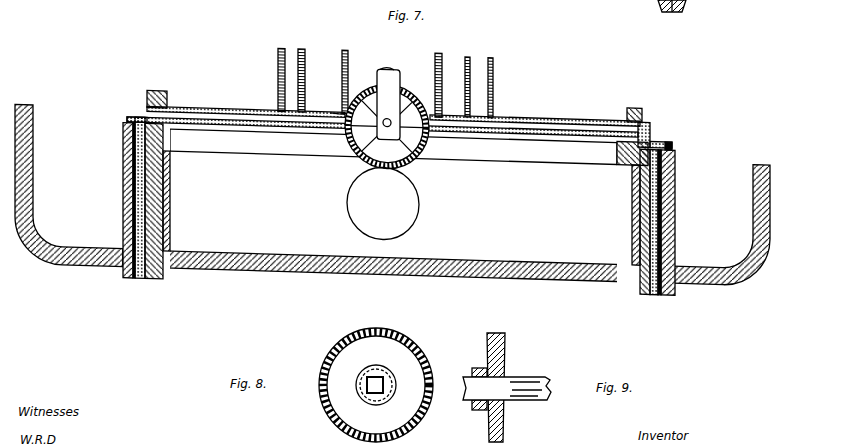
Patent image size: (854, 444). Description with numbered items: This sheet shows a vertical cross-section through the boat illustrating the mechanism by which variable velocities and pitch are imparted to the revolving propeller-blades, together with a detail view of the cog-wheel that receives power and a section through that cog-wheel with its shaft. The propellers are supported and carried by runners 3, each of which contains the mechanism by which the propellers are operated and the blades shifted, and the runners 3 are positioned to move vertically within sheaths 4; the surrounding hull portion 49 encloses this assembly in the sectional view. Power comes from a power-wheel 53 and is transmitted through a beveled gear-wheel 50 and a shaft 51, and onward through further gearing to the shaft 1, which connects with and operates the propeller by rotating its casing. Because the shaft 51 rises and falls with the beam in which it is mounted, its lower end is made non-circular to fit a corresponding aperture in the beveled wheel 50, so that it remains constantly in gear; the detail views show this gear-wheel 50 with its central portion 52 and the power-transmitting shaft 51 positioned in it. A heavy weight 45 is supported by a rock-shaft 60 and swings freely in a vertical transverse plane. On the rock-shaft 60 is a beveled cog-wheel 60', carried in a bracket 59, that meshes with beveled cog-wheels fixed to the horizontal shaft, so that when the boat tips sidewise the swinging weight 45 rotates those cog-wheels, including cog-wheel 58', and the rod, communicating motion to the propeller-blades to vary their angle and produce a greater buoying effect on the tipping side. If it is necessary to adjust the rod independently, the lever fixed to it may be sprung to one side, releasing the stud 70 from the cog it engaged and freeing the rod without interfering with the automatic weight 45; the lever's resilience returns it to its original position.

In FIG. 7, the shaft 1 is at (672, 12).
In FIG. 7, the runners 3 is at (126, 274).
In FIG. 7, the sheaths 4 is at (168, 197).
In FIG. 7, the heavy weight 45 is at (383, 203).
In FIG. 7, the trough casing 49 is at (25, 104).
In FIG. 8, the beveled gear-wheel 50 is at (376, 385).
In FIG. 9, the beveled gear-wheel 50 is at (498, 333).
In FIG. 8, the shaft 51 is at (370, 392).
In FIG. 9, the shaft 51 is at (507, 388).
In FIG. 8, the hub 52 is at (393, 378).
In FIG. 7, the power-wheel 53 is at (346, 104).
In FIG. 7, the cog-wheel 58' is at (430, 149).
In FIG. 7, the bearing bracket 59 is at (388, 104).
In FIG. 7, the rock-shaft 60 is at (393, 132).
In FIG. 7, the beveled cog-wheel 60' is at (384, 56).
In FIG. 7, the stud 70 is at (349, 110).